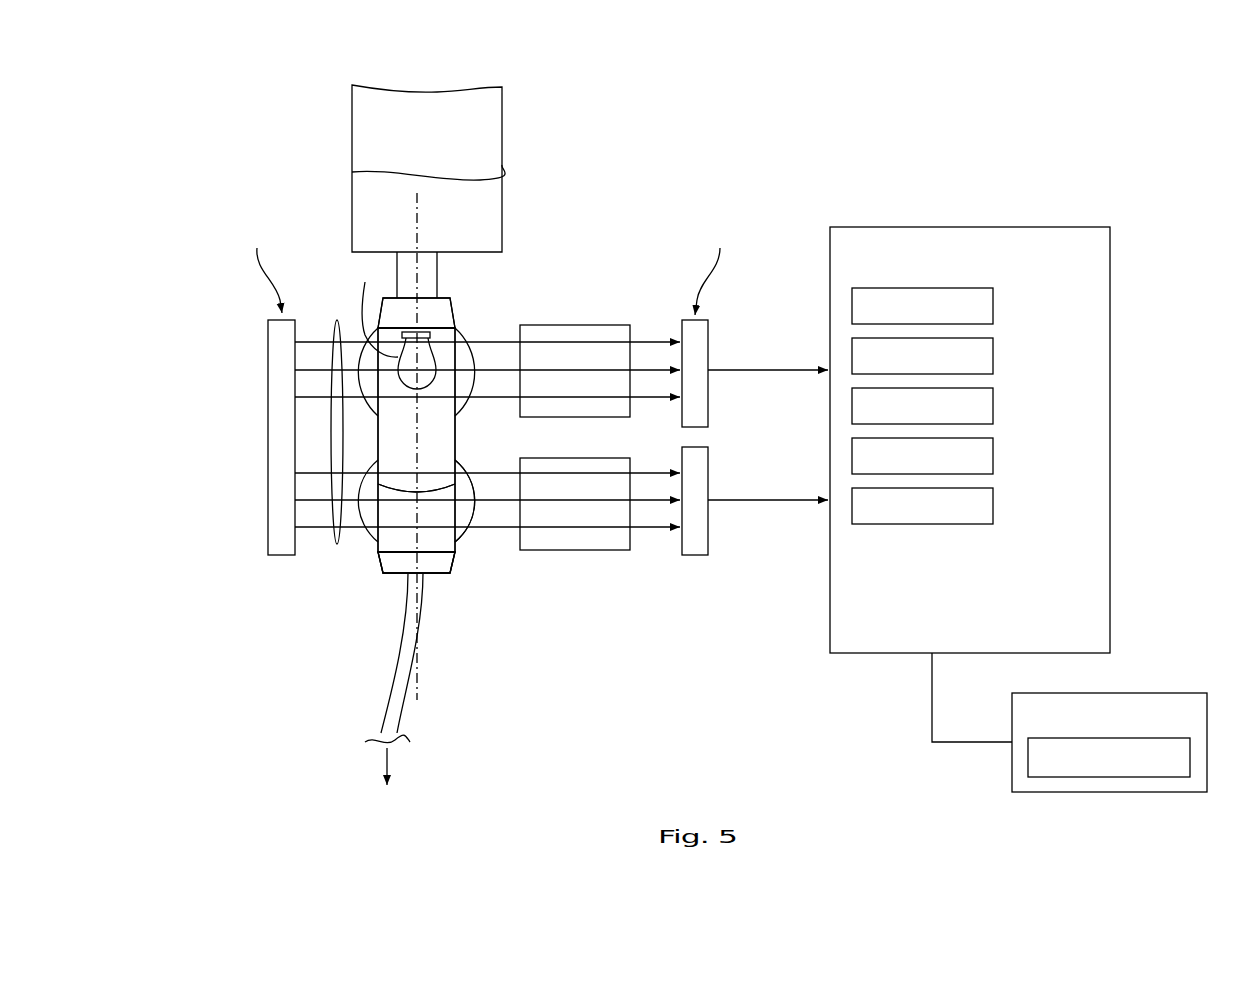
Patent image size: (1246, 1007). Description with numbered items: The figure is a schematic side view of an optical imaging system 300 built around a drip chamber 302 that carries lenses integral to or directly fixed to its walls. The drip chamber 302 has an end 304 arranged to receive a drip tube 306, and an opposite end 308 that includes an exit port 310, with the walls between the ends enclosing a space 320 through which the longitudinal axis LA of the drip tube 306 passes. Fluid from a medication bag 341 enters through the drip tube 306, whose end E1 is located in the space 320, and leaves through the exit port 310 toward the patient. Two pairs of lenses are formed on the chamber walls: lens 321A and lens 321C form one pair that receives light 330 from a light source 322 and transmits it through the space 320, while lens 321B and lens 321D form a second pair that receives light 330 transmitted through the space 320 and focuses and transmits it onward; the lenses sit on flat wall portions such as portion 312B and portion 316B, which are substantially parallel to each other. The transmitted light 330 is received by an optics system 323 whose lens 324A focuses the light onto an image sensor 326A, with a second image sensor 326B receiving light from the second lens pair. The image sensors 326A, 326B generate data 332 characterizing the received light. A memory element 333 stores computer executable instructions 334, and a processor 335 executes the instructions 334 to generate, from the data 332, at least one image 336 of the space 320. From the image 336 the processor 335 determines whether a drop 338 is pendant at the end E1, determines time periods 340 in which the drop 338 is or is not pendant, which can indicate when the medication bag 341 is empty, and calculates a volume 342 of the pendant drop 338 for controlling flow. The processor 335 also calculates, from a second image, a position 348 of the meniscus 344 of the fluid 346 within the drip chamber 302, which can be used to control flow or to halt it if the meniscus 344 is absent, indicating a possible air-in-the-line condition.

The optical imaging system 300 is at (675, 85).
The drip chamber 302 is at (350, 308).
The end 304 is at (458, 330).
The drip tube 306 is at (423, 328).
The end 308 is at (377, 532).
The exit port 310 is at (407, 578).
The portion of wall 312B is at (380, 487).
The portion of wall 316B is at (472, 512).
The space 320 is at (403, 417).
The lens 321A is at (368, 405).
The lens 321B is at (377, 562).
The lens 321C is at (475, 383).
The lens 321D is at (462, 540).
The light source 322 is at (268, 350).
The optics system 323 is at (712, 160).
The lens 324A is at (573, 325).
The image sensor 326A is at (708, 350).
The image sensor 326B is at (708, 478).
The light 330 is at (337, 318).
The data 332 is at (993, 306).
The memory element 333 is at (1125, 693).
The computer executable instructions 334 is at (1110, 792).
The processor 335 is at (966, 227).
The image 336 is at (993, 356).
The drop 338 is at (410, 377).
The time periods 340 is at (993, 406).
The medication bag 341 is at (507, 130).
The volume 342 is at (993, 456).
The meniscus 344 is at (445, 485).
The fluid 346 is at (397, 510).
The position 348 is at (993, 506).
The longitudinal axis LA is at (417, 221).
The end E1 is at (375, 308).